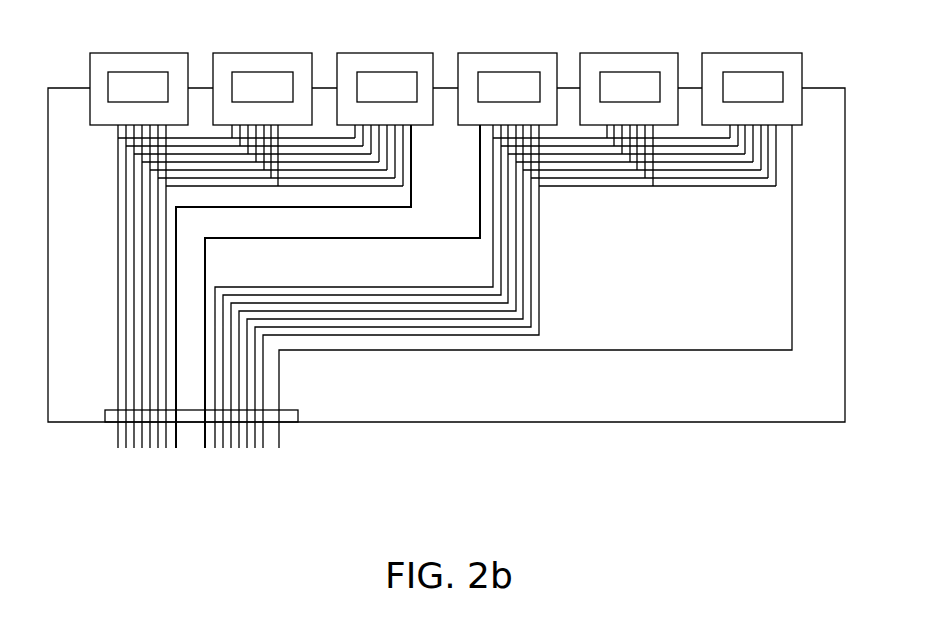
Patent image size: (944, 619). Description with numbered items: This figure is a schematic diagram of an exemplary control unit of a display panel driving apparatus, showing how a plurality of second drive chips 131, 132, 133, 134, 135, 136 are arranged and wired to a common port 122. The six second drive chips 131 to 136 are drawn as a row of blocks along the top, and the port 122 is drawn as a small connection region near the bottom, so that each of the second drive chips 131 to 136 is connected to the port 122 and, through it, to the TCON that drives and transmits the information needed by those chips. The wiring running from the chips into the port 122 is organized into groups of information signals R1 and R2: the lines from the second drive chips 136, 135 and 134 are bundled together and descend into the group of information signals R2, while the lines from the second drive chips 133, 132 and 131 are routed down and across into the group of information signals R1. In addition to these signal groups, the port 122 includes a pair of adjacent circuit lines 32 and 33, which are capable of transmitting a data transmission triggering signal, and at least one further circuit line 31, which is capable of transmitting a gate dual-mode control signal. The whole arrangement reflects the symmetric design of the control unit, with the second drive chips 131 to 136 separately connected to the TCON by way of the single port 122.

The second drive chip 136 is at (167, 53).
The second drive chip 135 is at (290, 53).
The second drive chip 134 is at (410, 53).
The second drive chip 133 is at (535, 53).
The second drive chip 132 is at (655, 53).
The second drive chip 131 is at (780, 53).
The port 122 is at (112, 423).
The circuit line 33 is at (177, 433).
The circuit line 32 is at (205, 433).
The circuit line 31 is at (282, 434).
The information signals R1 is at (275, 452).
The information signals R2 is at (170, 452).